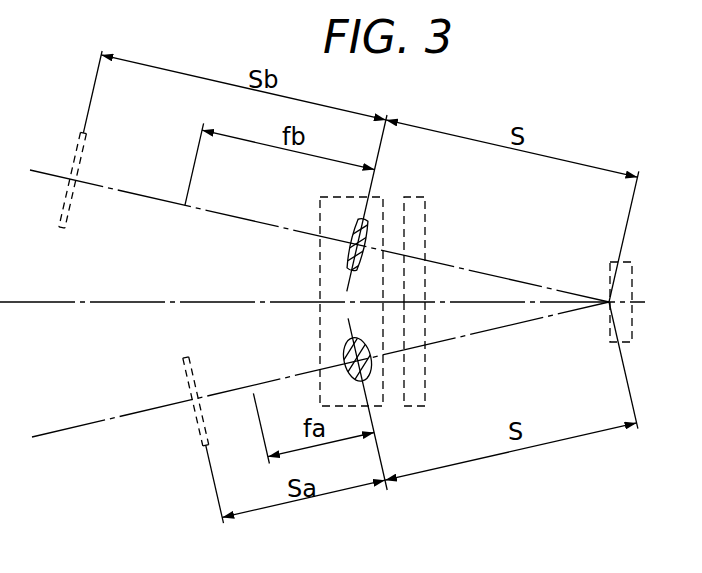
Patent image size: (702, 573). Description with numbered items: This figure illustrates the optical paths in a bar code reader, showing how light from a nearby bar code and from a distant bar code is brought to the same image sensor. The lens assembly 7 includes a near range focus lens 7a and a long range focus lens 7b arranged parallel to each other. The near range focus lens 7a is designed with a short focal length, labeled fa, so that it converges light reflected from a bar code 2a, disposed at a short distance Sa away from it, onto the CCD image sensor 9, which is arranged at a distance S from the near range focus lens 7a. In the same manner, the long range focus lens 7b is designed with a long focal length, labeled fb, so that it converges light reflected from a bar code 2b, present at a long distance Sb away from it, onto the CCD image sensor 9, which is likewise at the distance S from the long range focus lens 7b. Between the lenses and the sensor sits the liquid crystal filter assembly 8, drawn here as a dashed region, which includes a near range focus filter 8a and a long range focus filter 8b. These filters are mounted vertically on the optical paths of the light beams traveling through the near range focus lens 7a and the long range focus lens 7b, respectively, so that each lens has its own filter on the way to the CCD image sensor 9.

The bar code 2a is at (190, 358).
The bar code 2b is at (87, 135).
The lens assembly 7 is at (320, 210).
The near range focus lens 7a is at (343, 348).
The long range focus lens 7b is at (346, 260).
The liquid crystal filter assembly 8 is at (423, 196).
The near range focus filter 8a is at (414, 378).
The long range focus filter 8b is at (413, 228).
The CCD image sensor 9 is at (632, 263).